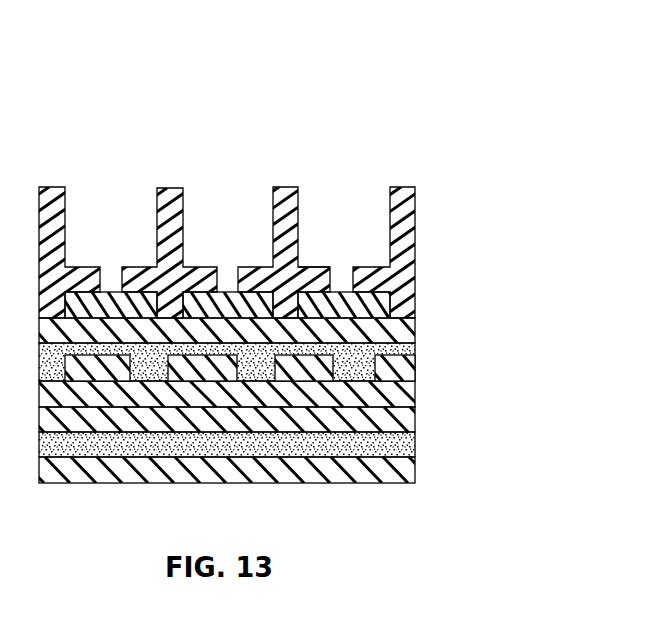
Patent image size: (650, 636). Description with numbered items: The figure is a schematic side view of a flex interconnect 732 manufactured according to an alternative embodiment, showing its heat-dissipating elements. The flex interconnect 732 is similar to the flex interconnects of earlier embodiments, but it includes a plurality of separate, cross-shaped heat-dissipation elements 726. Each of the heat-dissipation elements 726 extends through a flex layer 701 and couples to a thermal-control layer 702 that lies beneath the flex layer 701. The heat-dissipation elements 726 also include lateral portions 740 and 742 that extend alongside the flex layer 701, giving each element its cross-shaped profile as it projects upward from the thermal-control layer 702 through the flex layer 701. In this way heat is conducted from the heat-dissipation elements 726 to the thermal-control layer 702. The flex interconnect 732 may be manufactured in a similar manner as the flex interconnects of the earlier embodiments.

The flex interconnect 732 is at (405, 128).
The heat-dissipation elements 726 is at (148, 222).
The lateral portion 740 is at (263, 265).
The lateral portion 742 is at (308, 267).
The flex layer 701 is at (338, 290).
The thermal-control layer 702 is at (417, 335).